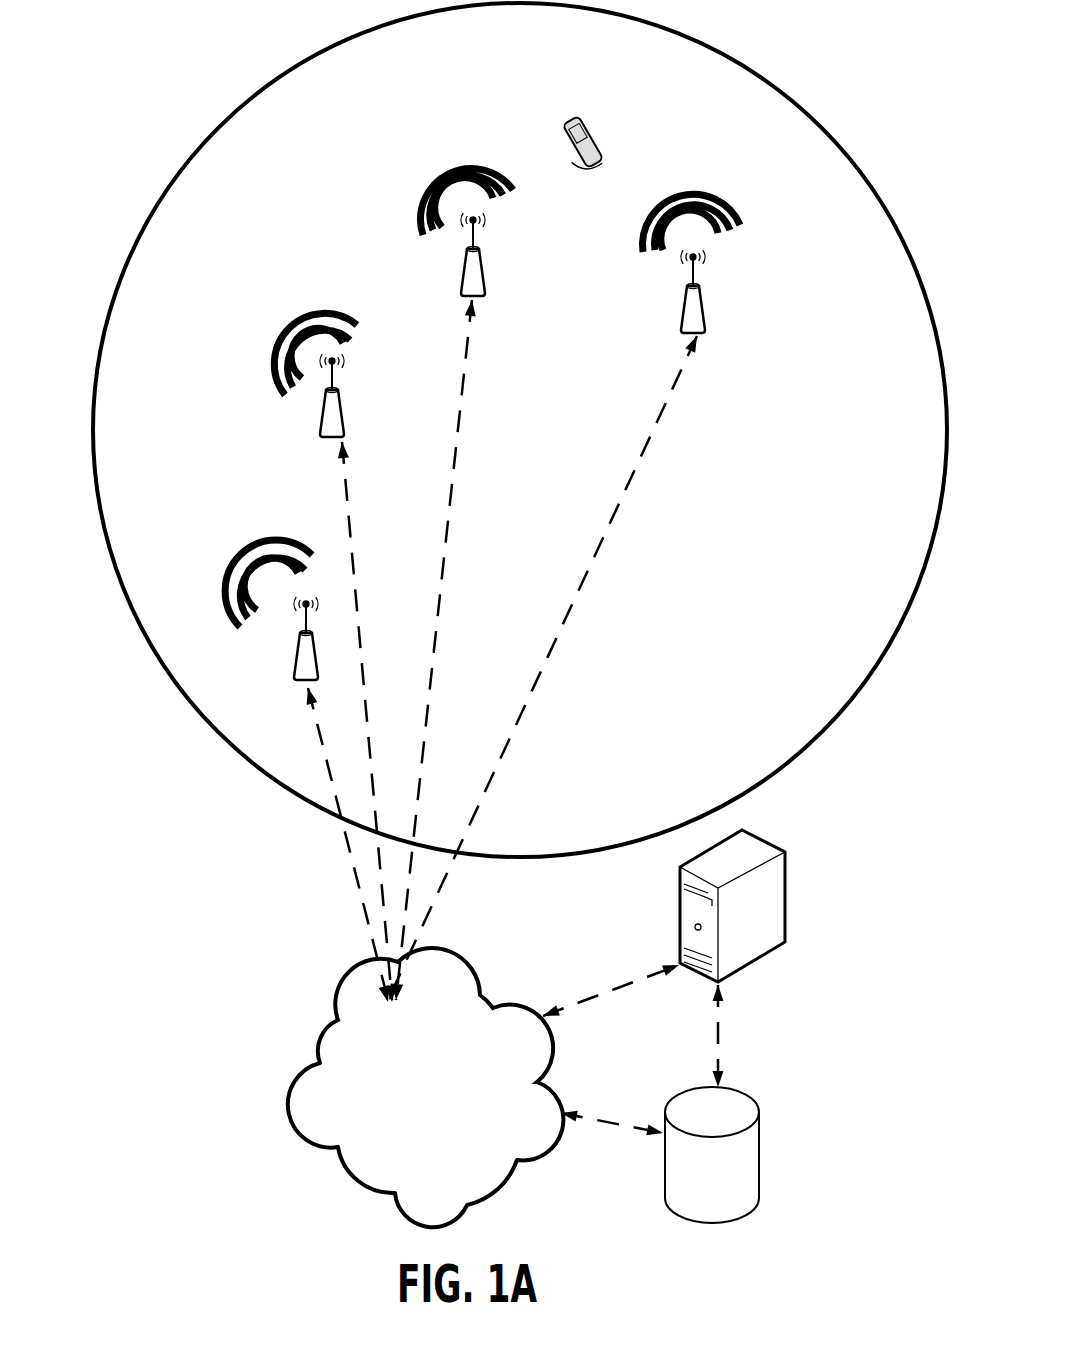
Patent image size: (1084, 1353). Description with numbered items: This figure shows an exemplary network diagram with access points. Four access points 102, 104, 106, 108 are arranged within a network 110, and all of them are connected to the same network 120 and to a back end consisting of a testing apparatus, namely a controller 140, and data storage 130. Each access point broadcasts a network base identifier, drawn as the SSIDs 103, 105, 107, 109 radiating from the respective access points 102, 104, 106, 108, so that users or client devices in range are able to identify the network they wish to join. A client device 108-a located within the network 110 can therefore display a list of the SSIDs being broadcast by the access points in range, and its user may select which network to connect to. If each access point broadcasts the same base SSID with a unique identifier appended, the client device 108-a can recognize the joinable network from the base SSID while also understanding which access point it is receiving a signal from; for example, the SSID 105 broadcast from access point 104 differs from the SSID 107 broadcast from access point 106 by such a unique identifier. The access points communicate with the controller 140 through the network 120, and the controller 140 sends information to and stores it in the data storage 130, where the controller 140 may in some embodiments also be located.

The access point 102 is at (318, 670).
The SSID 103 is at (310, 555).
The access point 104 is at (342, 423).
The SSID 105 is at (357, 327).
The access point 106 is at (485, 268).
The SSID 107 is at (510, 188).
The access point 108 is at (705, 315).
The SSID 109 is at (740, 223).
The client device 108-a is at (595, 130).
The network 110 is at (104, 333).
The network 120 is at (425, 1087).
The data storage 130 is at (712, 1155).
The controller 140 is at (785, 942).